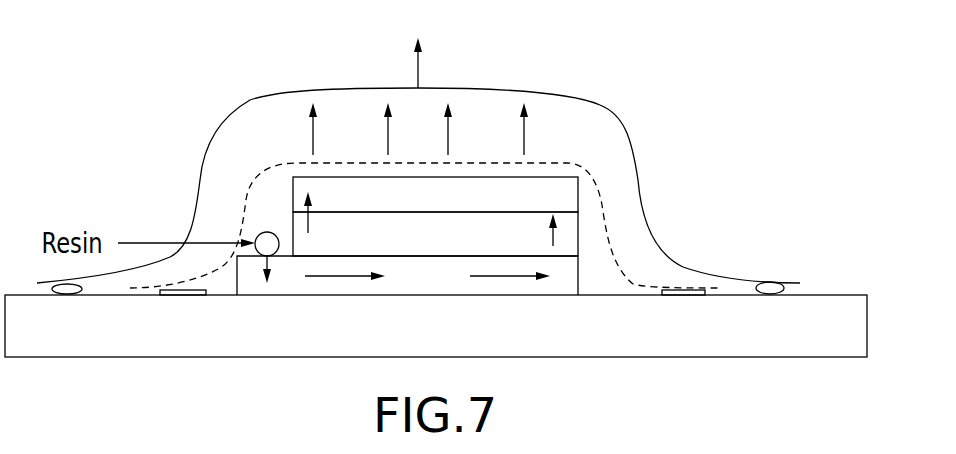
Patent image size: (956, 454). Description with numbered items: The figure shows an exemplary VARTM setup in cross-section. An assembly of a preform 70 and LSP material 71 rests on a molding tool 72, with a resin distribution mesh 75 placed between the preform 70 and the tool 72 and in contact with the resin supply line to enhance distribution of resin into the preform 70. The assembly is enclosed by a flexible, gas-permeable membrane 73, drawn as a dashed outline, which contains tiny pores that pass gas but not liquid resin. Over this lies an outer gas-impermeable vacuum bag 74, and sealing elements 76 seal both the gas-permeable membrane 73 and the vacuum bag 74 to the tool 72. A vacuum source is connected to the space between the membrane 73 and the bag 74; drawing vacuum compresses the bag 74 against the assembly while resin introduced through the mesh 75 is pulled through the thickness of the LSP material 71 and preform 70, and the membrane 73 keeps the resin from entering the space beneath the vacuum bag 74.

The preform 70 is at (435, 234).
The LSP material 71 is at (435, 205).
The molding tool 72 is at (436, 326).
The gas-permeable membrane 73 is at (633, 233).
The vacuum bag 74 is at (603, 93).
The resin distribution mesh 75 is at (407, 275).
The sealing elements 76 is at (706, 279).